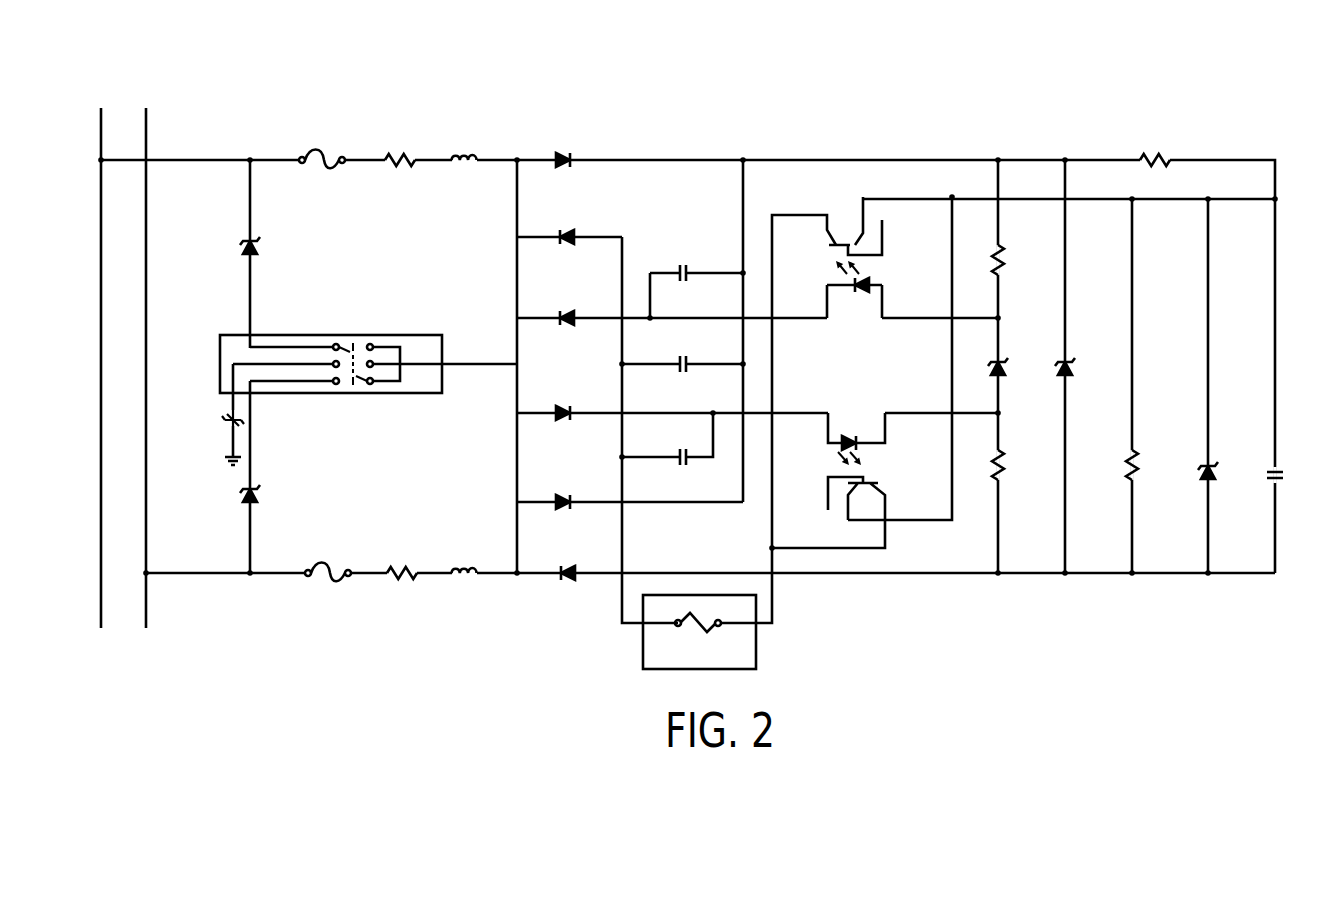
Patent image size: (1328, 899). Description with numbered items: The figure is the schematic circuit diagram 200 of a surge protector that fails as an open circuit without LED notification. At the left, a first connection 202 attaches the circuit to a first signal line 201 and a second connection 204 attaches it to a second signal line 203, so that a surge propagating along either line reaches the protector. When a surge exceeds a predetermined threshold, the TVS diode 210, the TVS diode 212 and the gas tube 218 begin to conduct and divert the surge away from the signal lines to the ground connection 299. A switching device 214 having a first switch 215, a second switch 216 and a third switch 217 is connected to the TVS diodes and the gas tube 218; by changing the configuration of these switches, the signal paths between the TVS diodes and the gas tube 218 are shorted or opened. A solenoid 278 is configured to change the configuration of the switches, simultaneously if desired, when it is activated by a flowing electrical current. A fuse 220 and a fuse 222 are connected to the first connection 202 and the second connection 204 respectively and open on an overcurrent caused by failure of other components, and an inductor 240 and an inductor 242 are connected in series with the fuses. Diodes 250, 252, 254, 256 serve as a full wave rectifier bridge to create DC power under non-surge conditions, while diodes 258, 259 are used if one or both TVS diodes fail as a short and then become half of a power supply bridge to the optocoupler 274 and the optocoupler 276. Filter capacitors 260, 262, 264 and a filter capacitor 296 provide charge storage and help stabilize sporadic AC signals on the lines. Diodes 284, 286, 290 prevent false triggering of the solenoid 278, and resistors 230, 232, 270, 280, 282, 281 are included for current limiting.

The schematic circuit diagram 200 is at (333, 93).
The first signal line 201 is at (101, 440).
The second signal line 203 is at (146, 418).
The first connection 202 is at (220, 160).
The second connection 204 is at (222, 578).
The TVS diode 210 is at (245, 250).
The TVS diode 212 is at (245, 498).
The switching device 214 is at (336, 362).
The first switch 215 is at (358, 352).
The second switch 216 is at (349, 350).
The third switch 217 is at (360, 386).
The gas tube 218 is at (225, 420).
The ground connection 299 is at (228, 458).
The fuse 220 is at (305, 157).
The fuse 222 is at (328, 571).
The resistor 230 is at (385, 157).
The resistor 232 is at (403, 578).
The inductor 240 is at (464, 157).
The inductor 242 is at (463, 568).
The diode 250 is at (559, 157).
The diode 252 is at (559, 500).
The diode 254 is at (579, 236).
The diode 256 is at (570, 581).
The diode 258 is at (559, 318).
The diode 259 is at (561, 408).
The filter capacitor 260 is at (676, 270).
The filter capacitor 262 is at (676, 361).
The filter capacitor 264 is at (676, 454).
The resistor 270 is at (1165, 158).
The optocoupler 274 is at (880, 272).
The optocoupler 276 is at (870, 458).
The solenoid 278 is at (756, 648).
The resistor 280 is at (1005, 260).
The resistor 281 is at (1135, 456).
The resistor 282 is at (1002, 478).
The diode 284 is at (1003, 378).
The diode 286 is at (1060, 361).
The diode 290 is at (1212, 484).
The filter capacitor 296 is at (1282, 484).